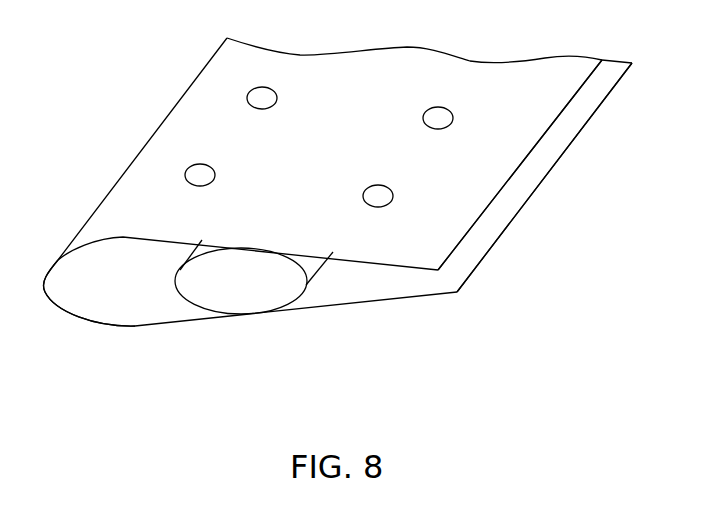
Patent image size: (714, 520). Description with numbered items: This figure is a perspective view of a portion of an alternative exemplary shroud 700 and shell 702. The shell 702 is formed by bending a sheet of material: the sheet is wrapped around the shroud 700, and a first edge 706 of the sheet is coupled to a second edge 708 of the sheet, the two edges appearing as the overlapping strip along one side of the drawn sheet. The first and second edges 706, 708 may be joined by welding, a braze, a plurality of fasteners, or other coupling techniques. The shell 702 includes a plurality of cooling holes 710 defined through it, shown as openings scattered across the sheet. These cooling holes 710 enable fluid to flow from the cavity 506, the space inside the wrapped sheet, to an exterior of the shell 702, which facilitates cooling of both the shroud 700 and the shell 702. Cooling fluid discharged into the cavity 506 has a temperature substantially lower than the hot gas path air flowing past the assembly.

The cavity 506 is at (121, 291).
The shroud 700 is at (245, 296).
The shell 702 is at (161, 172).
The first edge 706 is at (521, 166).
The second edge 708 is at (516, 220).
The cooling holes 710 is at (261, 97).